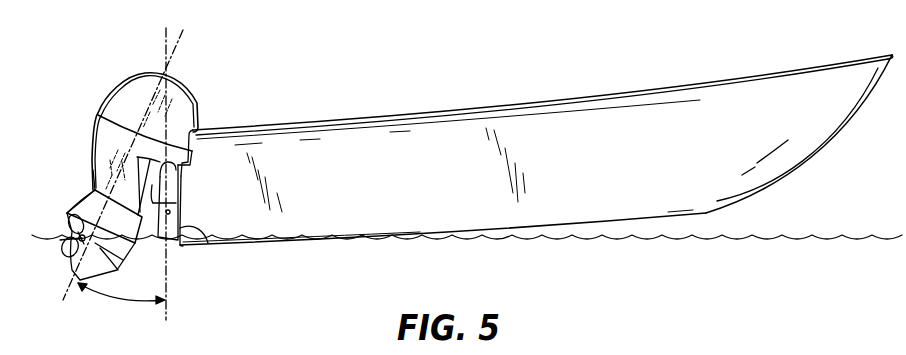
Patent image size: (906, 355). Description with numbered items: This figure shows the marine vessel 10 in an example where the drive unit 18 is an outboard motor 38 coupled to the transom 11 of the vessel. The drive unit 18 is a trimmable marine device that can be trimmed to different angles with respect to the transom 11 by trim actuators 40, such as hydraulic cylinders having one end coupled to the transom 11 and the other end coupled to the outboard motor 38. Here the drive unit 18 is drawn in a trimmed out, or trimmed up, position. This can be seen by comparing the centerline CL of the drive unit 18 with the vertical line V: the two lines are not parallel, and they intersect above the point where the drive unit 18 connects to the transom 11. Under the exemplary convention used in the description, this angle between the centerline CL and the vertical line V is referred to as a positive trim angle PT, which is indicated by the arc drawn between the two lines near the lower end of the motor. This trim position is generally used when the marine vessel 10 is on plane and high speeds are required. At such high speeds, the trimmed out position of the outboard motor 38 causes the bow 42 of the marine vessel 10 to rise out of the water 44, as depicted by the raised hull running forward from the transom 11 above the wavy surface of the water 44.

The marine vessel 10 is at (536, 170).
The transom 11 is at (180, 237).
The drive unit 18 is at (177, 156).
The outboard motor 38 is at (103, 100).
The trim actuators 40 is at (163, 207).
The bow 42 is at (805, 172).
The water 44 is at (853, 237).
The vertical line V is at (163, 42).
The centerline CL is at (178, 38).
The positive trim angle PT is at (118, 298).